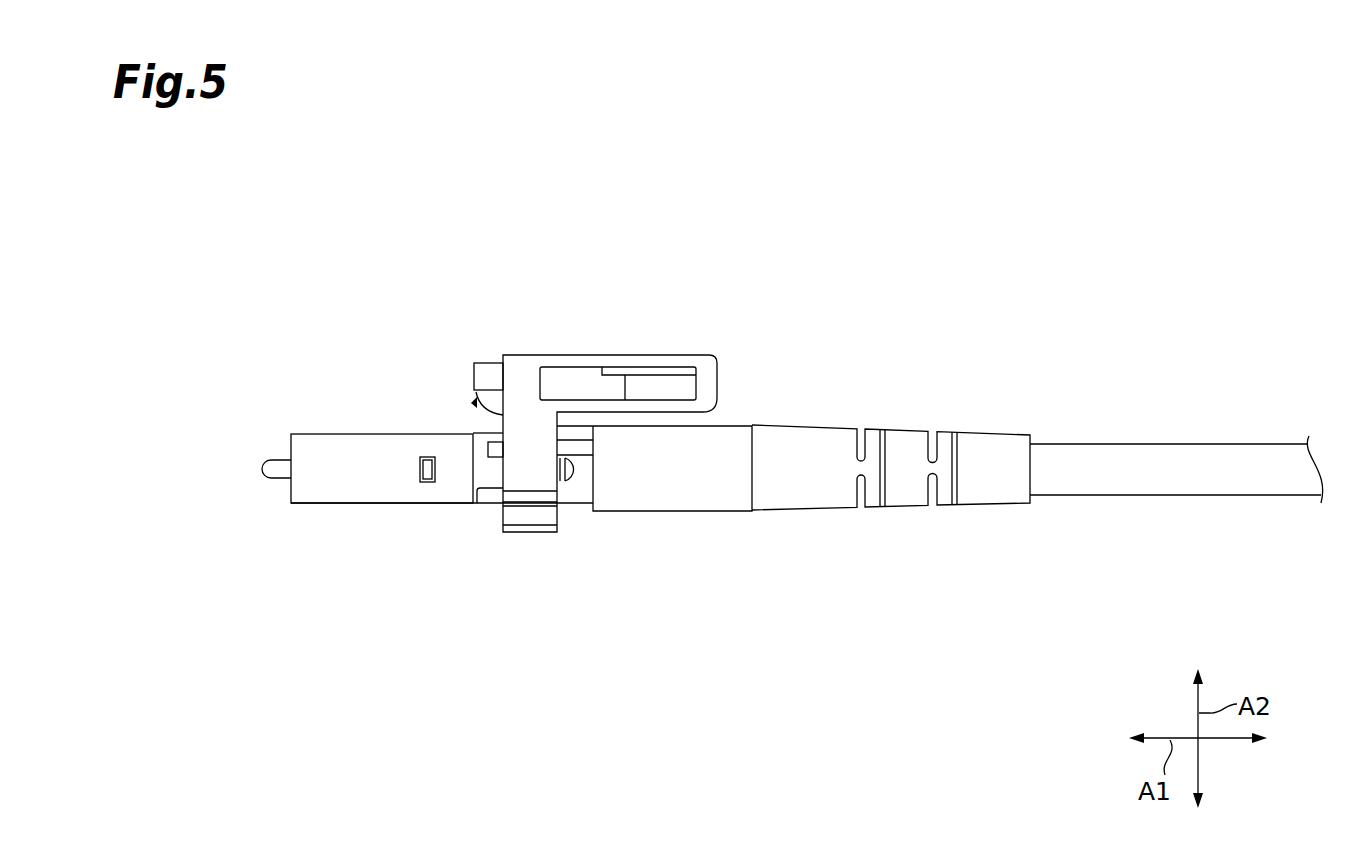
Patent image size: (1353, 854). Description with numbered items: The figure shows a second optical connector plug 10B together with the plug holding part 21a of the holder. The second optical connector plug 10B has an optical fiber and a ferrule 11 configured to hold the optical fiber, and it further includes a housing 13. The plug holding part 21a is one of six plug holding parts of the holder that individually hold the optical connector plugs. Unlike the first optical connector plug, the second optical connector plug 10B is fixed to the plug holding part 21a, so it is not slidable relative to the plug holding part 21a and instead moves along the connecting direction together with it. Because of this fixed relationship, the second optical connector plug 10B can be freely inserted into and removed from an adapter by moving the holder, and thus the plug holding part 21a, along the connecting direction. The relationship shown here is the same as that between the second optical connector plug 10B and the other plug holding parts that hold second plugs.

The second optical connector plug 10B is at (348, 404).
The ferrule 11 is at (272, 462).
The housing 13 is at (357, 485).
The plug holding part 21a is at (525, 373).